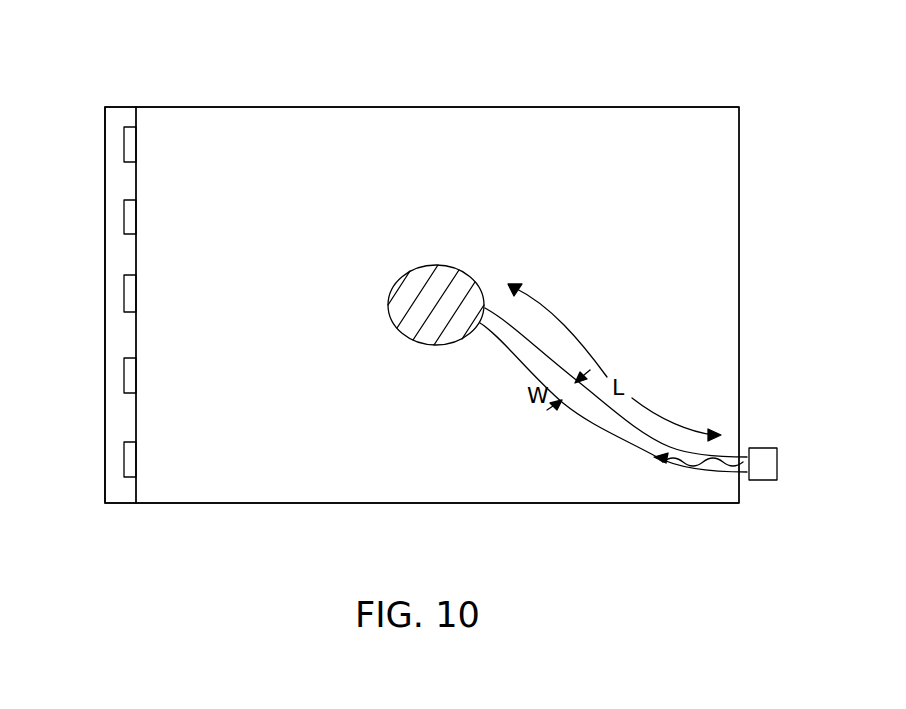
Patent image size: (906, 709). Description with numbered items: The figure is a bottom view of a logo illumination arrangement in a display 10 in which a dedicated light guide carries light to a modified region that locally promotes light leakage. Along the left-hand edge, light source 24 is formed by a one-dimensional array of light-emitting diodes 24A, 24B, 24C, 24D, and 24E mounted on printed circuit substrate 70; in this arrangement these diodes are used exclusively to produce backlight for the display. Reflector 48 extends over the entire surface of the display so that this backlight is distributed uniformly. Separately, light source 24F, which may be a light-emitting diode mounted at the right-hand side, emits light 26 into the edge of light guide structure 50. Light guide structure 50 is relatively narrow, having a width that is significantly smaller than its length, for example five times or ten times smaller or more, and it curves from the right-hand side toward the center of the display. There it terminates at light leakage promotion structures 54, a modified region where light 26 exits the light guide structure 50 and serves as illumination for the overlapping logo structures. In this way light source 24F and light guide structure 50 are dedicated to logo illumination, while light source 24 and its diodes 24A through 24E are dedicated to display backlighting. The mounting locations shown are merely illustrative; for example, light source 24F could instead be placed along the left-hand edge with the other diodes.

The display device 10 is at (708, 44).
The light source 24 is at (124, 92).
The light-emitting diode 24A is at (123, 135).
The light-emitting diode 24B is at (123, 211).
The light-emitting diode 24C is at (123, 288).
The light-emitting diode 24D is at (123, 371).
The light-emitting diode 24E is at (123, 456).
The light source 24F is at (763, 452).
The light 26 is at (681, 470).
The reflector 48 is at (720, 200).
The light guide structure 50 is at (597, 417).
The light leakage promotion structures 54 is at (445, 273).
The printed circuit substrate 70 is at (118, 490).